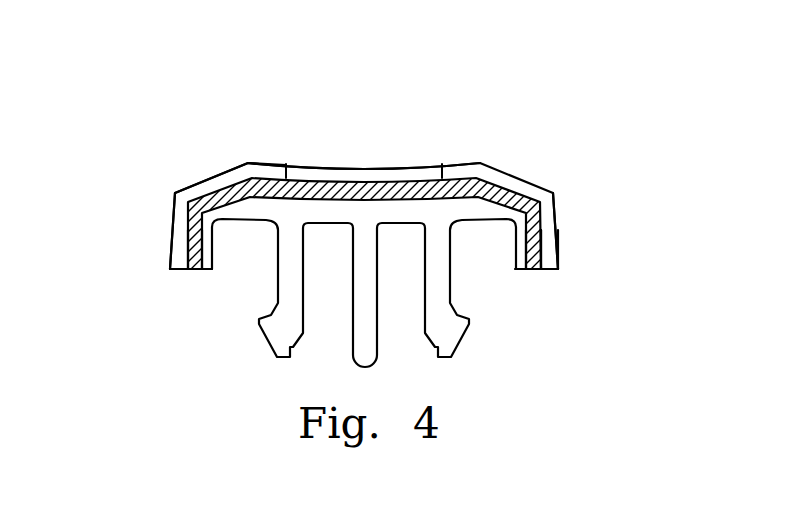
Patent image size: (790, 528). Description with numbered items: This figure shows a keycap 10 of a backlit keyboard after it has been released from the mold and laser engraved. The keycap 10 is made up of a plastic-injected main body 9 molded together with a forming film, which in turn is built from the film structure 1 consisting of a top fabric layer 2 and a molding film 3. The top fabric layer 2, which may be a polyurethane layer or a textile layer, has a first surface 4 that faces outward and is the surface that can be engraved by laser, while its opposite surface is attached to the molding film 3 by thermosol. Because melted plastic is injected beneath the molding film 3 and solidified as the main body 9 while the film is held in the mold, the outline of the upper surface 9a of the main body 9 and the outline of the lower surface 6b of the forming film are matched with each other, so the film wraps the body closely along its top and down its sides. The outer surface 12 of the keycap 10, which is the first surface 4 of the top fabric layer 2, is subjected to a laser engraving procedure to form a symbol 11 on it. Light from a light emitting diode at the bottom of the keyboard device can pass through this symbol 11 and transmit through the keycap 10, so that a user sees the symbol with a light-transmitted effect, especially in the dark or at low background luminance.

The film structure 1 is at (515, 173).
The top fabric layer 2 is at (551, 258).
The molding film 3 is at (535, 257).
The first surface 4 is at (173, 225).
The lower surface 6b is at (231, 203).
The main body 9 is at (207, 258).
The upper surface 9a is at (187, 250).
The keycap 10 is at (192, 170).
The symbol 11 is at (357, 168).
The outer surface 12 is at (557, 224).